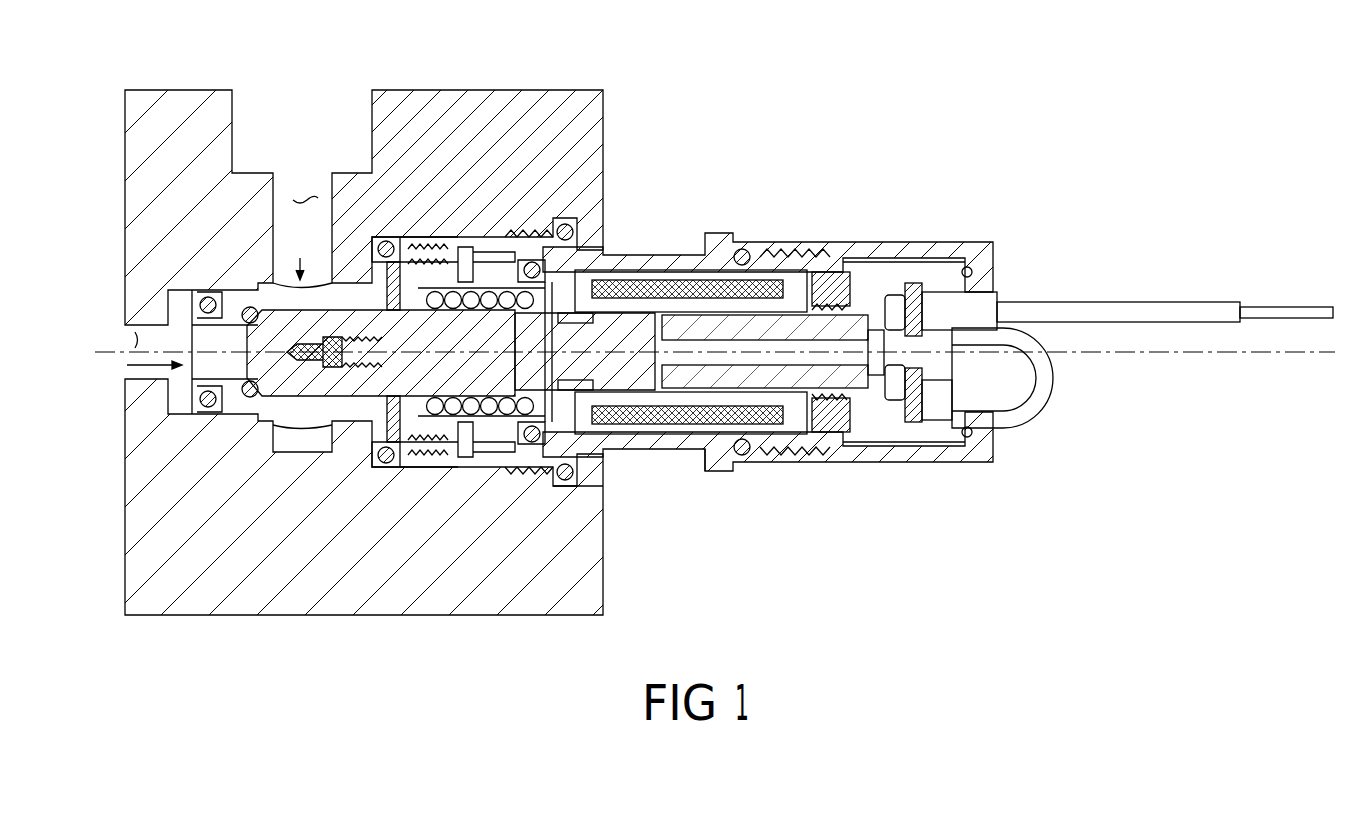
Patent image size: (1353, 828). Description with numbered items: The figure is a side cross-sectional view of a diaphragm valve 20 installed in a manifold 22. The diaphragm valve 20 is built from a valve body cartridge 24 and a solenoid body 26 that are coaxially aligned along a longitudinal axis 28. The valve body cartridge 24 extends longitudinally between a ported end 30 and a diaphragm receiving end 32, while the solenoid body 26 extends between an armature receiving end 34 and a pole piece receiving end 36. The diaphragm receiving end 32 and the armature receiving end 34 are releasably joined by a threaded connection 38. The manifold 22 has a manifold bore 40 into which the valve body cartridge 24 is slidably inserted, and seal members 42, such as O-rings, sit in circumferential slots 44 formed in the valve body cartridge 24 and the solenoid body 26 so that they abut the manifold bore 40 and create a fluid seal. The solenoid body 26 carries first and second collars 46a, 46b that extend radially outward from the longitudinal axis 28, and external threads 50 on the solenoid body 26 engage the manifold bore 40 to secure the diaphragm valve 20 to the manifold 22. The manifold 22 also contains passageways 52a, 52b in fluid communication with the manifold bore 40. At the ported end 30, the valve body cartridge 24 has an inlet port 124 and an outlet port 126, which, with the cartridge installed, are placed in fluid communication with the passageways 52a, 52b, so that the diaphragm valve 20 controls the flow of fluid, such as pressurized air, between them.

The diaphragm valve 20 is at (870, 612).
The manifold 22 is at (233, 570).
The valve body cartridge 24 is at (324, 452).
The solenoid body 26 is at (657, 261).
The longitudinal axis 28 is at (1195, 356).
The ported end 30 is at (242, 402).
The diaphragm receiving end 32 is at (420, 243).
The armature receiving end 34 is at (488, 460).
The pole piece receiving end 36 is at (835, 268).
The threaded connection 38 is at (432, 470).
The manifold bore 40 is at (237, 287).
The seal members 42 is at (570, 222).
The circumferential slots 44 is at (370, 240).
The first collar 46a is at (590, 486).
The second collar 46b is at (718, 470).
The external threads 50 is at (527, 462).
The passageway 52a is at (303, 195).
The passageway 52b is at (138, 350).
The inlet port 124 is at (308, 254).
The outlet port 126 is at (127, 365).